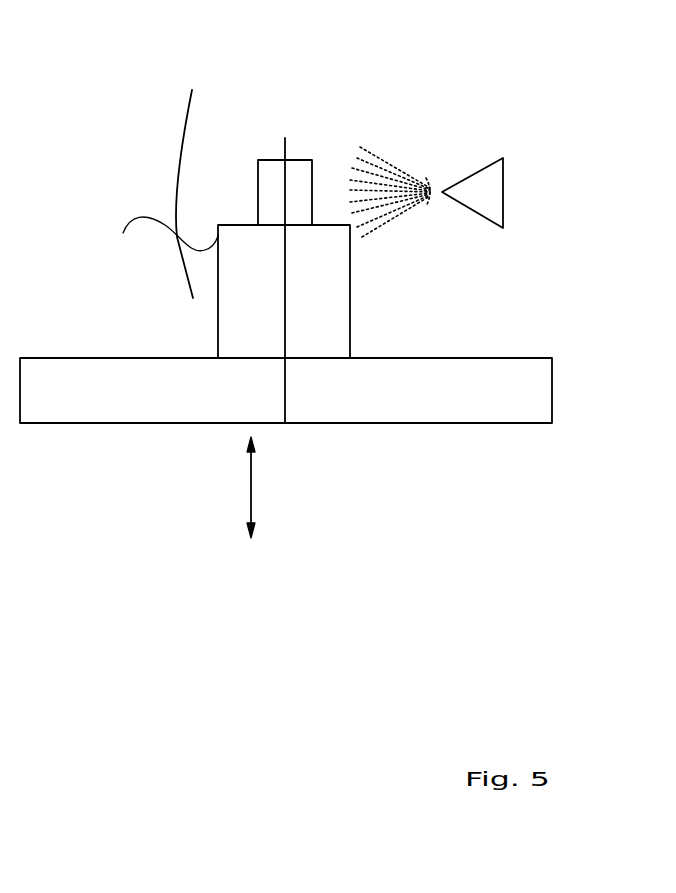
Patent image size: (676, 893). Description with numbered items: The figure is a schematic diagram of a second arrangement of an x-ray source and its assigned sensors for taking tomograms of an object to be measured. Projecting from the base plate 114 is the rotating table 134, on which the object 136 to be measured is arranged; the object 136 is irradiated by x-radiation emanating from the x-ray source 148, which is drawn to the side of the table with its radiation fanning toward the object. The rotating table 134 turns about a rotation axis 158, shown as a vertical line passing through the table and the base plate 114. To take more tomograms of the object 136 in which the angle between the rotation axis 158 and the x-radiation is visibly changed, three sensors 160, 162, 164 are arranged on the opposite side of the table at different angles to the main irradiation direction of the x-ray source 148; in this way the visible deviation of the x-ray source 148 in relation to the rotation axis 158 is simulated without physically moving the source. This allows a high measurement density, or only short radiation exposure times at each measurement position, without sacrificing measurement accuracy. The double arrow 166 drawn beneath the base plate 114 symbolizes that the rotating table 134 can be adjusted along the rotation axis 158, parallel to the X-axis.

The base plate 114 is at (410, 408).
The rotating table 134 is at (337, 300).
The object 136 is at (268, 183).
The rotation axis 158 is at (277, 153).
The x-ray source 148 is at (495, 195).
The sensor 164 is at (183, 117).
The sensor 162 is at (175, 185).
The sensor 160 is at (182, 262).
The double arrow 166 is at (252, 480).